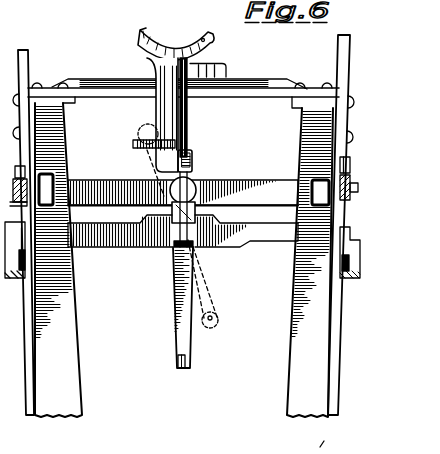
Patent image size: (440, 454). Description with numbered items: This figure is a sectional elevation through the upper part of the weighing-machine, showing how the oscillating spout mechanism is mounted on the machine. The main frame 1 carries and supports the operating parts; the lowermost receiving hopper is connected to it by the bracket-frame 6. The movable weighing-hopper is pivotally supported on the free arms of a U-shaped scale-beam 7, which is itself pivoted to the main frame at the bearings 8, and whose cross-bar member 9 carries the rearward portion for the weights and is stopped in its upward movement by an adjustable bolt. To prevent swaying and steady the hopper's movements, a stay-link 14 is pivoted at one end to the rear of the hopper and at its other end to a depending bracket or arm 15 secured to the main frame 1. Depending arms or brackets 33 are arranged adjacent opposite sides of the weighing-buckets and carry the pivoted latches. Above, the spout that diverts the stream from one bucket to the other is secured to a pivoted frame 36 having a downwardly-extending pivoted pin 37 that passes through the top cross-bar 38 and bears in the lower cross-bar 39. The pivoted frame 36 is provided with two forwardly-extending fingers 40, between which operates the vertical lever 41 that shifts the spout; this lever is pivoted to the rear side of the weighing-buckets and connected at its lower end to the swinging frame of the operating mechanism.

The main frame 1 is at (40, 353).
The bracket-frame 6 is at (13, 196).
The scale-beam 7 is at (256, 196).
The bearings 8 is at (352, 195).
The cross-bar member 9 is at (12, 269).
The stay-link 14 is at (187, 363).
The depending bracket or arm 15 is at (175, 338).
The depending arms or brackets 33 is at (356, 282).
The pivoted frame 36 is at (157, 105).
The pivoted pin 37 is at (189, 150).
The top cross-bar 38 is at (252, 84).
The lower cross-bar 39 is at (287, 249).
The forwardly-extending fingers 40 is at (135, 143).
The vertical lever 41 is at (262, 308).